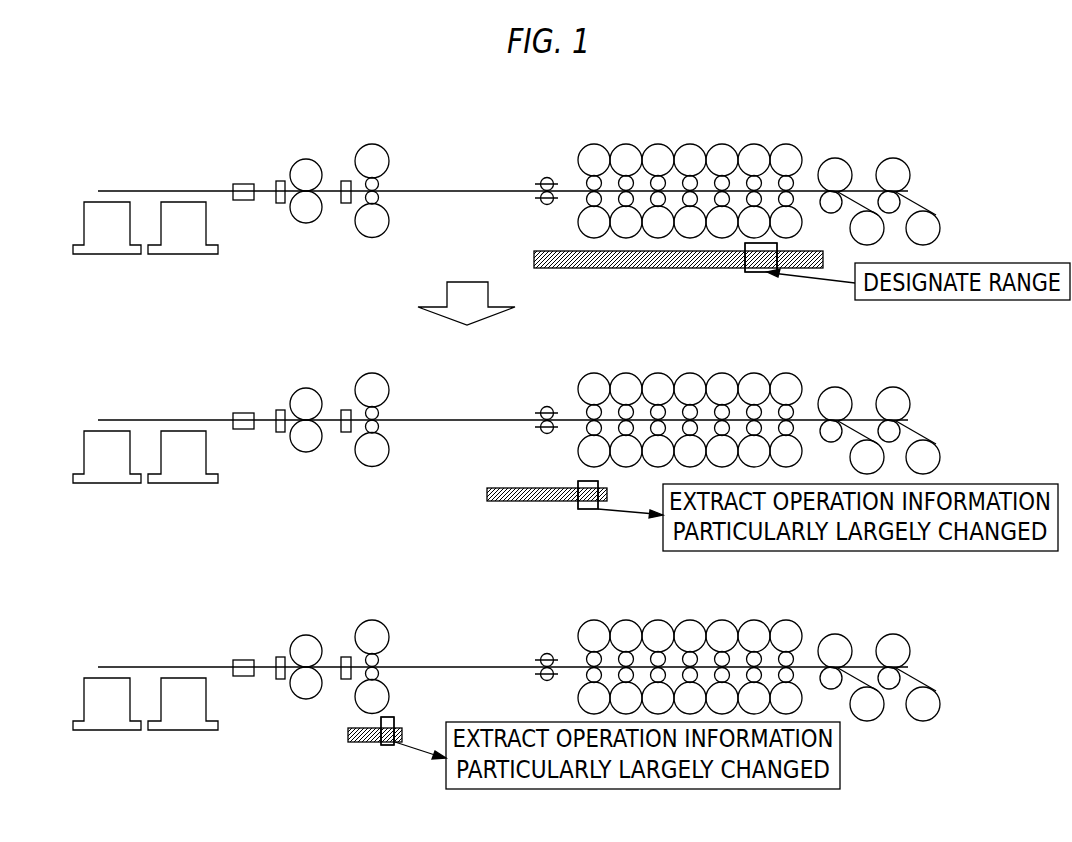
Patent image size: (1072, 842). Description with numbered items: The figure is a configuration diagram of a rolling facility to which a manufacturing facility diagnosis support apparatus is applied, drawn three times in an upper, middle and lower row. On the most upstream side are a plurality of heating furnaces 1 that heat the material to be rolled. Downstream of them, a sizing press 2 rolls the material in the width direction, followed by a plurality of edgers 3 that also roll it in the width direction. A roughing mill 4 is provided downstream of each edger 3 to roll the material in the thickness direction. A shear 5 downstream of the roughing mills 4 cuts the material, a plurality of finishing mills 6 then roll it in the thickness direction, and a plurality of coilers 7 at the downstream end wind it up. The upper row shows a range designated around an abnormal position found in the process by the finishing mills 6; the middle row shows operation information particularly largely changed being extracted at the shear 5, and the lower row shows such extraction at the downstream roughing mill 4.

The heating furnace 1 is at (108, 257).
The sizing press 2 is at (243, 183).
The edger 3 is at (279, 180).
The roughing mill 4 is at (304, 157).
The shear 5 is at (545, 176).
The finishing mill 6 is at (594, 142).
The coiler 7 is at (834, 157).